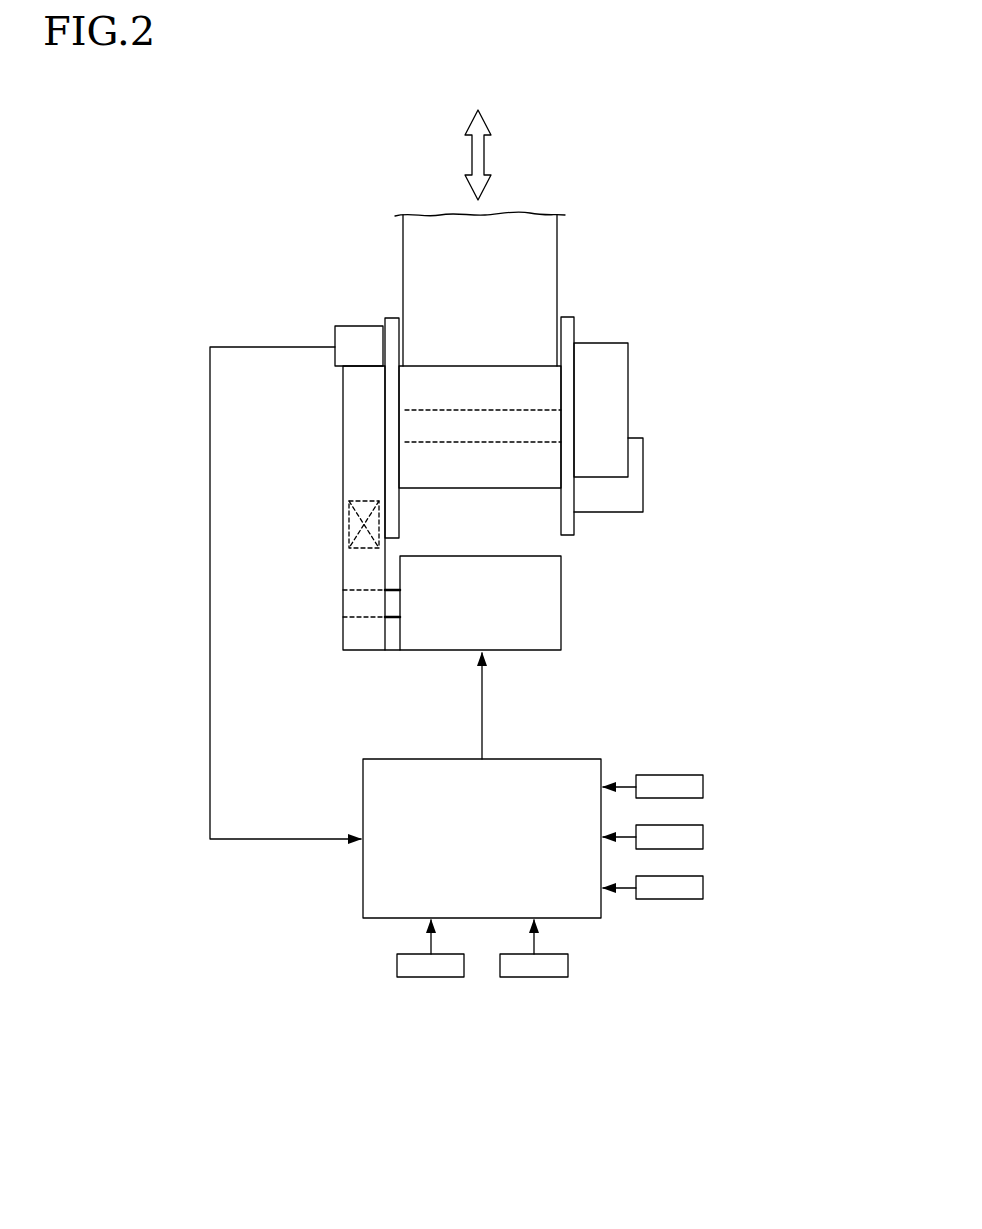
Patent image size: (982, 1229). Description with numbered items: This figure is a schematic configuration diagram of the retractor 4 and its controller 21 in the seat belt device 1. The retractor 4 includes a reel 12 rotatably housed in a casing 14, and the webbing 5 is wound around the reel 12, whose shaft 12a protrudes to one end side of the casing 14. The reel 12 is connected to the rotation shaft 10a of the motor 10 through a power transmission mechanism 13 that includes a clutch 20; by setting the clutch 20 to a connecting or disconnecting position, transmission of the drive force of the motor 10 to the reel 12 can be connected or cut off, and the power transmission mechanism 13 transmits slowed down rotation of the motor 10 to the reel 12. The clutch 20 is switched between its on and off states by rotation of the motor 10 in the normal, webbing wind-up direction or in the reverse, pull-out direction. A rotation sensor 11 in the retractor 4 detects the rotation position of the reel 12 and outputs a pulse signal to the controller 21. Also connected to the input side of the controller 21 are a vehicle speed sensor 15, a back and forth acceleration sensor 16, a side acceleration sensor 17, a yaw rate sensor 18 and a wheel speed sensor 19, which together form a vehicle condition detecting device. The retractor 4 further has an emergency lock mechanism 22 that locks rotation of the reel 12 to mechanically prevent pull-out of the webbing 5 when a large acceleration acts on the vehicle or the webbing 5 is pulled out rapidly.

The processing apparatus 1 is at (601, 260).
The retractor 4 is at (586, 331).
The webbing 5 is at (434, 225).
The motor 10 is at (545, 603).
The rotation shaft 10a is at (393, 605).
The rotation sensor 11 is at (357, 326).
The reel 12 is at (561, 464).
The rotating body holding portion 12a is at (528, 442).
The power transmission mechanism 13 is at (343, 436).
The casing 14 is at (565, 374).
The vehicle speed sensor 15 is at (703, 787).
The back and forth acceleration sensor 16 is at (703, 837).
The side acceleration sensor 17 is at (703, 888).
The yaw rate sensor 18 is at (430, 980).
The wheel speed sensor 19 is at (536, 980).
The clutch 20 is at (349, 522).
The controller 21 is at (545, 759).
The emergency lock mechanism 22 is at (632, 410).